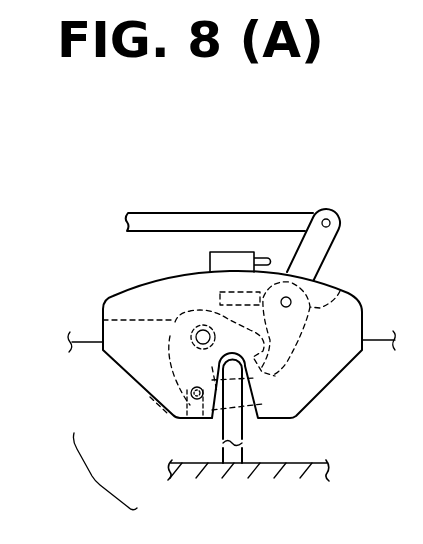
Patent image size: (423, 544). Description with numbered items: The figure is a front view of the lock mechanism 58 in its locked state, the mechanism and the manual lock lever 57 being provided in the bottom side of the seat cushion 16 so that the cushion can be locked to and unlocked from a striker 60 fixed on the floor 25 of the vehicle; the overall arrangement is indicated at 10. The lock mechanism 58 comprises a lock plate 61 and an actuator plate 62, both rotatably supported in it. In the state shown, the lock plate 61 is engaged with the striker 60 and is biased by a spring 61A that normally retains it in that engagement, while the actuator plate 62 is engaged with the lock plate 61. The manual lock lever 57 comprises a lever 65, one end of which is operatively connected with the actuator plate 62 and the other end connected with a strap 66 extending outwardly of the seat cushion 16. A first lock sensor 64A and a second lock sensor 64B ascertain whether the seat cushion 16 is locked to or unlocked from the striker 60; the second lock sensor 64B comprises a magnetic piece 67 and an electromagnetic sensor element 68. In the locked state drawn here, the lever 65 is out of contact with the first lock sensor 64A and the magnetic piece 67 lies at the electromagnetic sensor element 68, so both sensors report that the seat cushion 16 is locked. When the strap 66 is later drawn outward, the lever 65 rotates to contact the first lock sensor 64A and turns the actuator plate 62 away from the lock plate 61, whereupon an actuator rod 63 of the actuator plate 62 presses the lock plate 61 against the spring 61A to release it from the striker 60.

The door lock device 10 is at (75, 237).
The seat cushion 16 is at (83, 345).
The floor 25 is at (308, 463).
The manual lock lever 57 is at (98, 189).
The lock mechanism 58 is at (126, 292).
The striker 60 is at (243, 429).
The lock plate 61 is at (167, 348).
The spring 61A is at (103, 320).
The actuator plate 62 is at (340, 291).
The actuator rod 63 is at (238, 290).
The first lock sensor 64A is at (218, 262).
The second lock sensor 64B is at (91, 473).
The lever 65 is at (328, 249).
The strap 66 is at (206, 216).
The magnetic piece 67 is at (172, 418).
The electromagnetic sensor element 68 is at (173, 420).